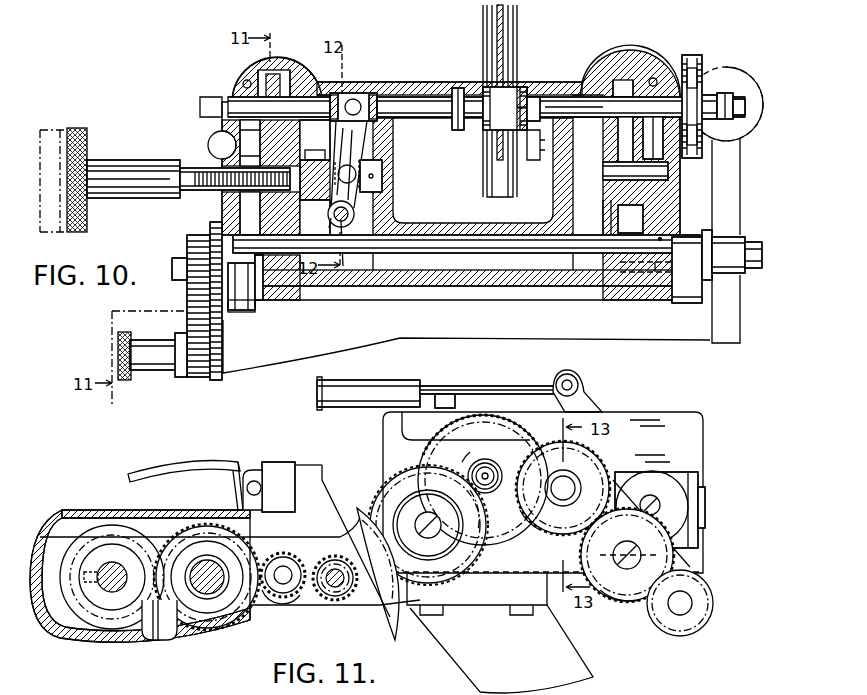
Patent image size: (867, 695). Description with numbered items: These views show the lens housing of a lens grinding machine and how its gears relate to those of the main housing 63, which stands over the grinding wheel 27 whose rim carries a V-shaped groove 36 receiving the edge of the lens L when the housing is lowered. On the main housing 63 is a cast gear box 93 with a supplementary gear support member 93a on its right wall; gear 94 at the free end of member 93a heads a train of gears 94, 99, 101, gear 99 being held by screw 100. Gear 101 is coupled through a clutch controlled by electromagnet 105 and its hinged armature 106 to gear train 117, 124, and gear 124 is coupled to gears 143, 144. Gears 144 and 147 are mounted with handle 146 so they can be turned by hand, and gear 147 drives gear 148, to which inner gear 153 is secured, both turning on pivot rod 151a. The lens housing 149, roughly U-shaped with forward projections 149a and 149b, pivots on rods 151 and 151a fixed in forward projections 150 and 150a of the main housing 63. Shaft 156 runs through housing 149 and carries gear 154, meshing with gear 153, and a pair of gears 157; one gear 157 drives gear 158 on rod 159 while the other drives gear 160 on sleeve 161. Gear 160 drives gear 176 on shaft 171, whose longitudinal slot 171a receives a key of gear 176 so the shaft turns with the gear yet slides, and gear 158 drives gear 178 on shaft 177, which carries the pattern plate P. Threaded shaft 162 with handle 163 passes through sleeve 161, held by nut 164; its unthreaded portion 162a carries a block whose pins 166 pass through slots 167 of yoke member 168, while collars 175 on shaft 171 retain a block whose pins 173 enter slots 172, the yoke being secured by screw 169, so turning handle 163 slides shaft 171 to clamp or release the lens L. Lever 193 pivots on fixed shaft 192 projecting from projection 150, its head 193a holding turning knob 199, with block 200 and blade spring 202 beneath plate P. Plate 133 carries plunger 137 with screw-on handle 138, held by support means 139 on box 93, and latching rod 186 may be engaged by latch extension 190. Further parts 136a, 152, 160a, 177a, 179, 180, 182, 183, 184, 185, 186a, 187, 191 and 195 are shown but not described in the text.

In FIG. 10, the grinding wheel 27 is at (514, 8).
In FIG. 10, the V-shaped groove 36 is at (492, 8).
In FIG. 10, the main housing 63 is at (630, 346).
In FIG. 11, the main housing 63 is at (583, 644).
In FIG. 11, the gear box 93 is at (377, 435).
In FIG. 11, the supplementary gear support member 93a is at (690, 567).
In FIG. 11, the gear 94 is at (652, 602).
In FIG. 11, the gear 99 is at (643, 500).
In FIG. 11, the screw 100 is at (630, 568).
In FIG. 11, the gear 101 is at (585, 530).
In FIG. 11, the electromagnet 105 is at (648, 471).
In FIG. 11, the armature 106 is at (706, 505).
In FIG. 11, the gear 117 is at (570, 482).
In FIG. 11, the gear 124 is at (494, 415).
In FIG. 11, the plate 133 is at (582, 398).
In FIG. 11, the pivot 136a is at (569, 375).
In FIG. 11, the plunger 137 is at (455, 386).
In FIG. 11, the screw-on handle 138 is at (352, 382).
In FIG. 11, the support means 139 is at (445, 394).
In FIG. 11, the gear 143 is at (478, 460).
In FIG. 10, the gear 144 is at (183, 378).
In FIG. 11, the gear 144 is at (470, 510).
In FIG. 10, the handle 146 is at (125, 381).
In FIG. 11, the handle 146 is at (460, 540).
In FIG. 10, the gear 147 is at (185, 370).
In FIG. 11, the gear 147 is at (405, 548).
In FIG. 10, the gear 148 is at (195, 255).
In FIG. 11, the gear 148 is at (390, 600).
In FIG. 10, the lens housing 149 is at (236, 86).
In FIG. 11, the lens housing 149 is at (277, 522).
In FIG. 10, the forward projection 149a is at (648, 68).
In FIG. 10, the forward projection 149b is at (270, 74).
In FIG. 11, the forward projection 149b is at (62, 510).
In FIG. 10, the forward projection 150 is at (682, 303).
In FIG. 10, the forward projection 150a is at (250, 312).
In FIG. 10, the rod 151 is at (652, 300).
In FIG. 10, the pivot rod 151a is at (264, 300).
In FIG. 11, the pivot rod 151a is at (338, 590).
In FIG. 10, the nut 152 is at (748, 270).
In FIG. 10, the inner gear 153 is at (243, 310).
In FIG. 11, the inner gear 153 is at (322, 600).
In FIG. 10, the gear 154 is at (215, 225).
In FIG. 11, the gear 154 is at (300, 595).
In FIG. 10, the shaft 156 is at (400, 255).
In FIG. 11, the shaft 156 is at (284, 585).
In FIG. 10, the gears 157 is at (300, 286).
In FIG. 10, the gear 158 is at (626, 210).
In FIG. 10, the rod 159 is at (664, 172).
In FIG. 10, the gear 160 is at (300, 130).
In FIG. 11, the gear 160 is at (282, 598).
In FIG. 10, the bracket lug 160a is at (325, 160).
In FIG. 10, the sleeve 161 is at (222, 170).
In FIG. 11, the sleeve 161 is at (207, 600).
In FIG. 10, the threaded shaft 162 is at (205, 165).
In FIG. 11, the threaded shaft 162 is at (203, 565).
In FIG. 10, the unthreaded end portion 162a is at (382, 178).
In FIG. 10, the handle 163 is at (150, 160).
In FIG. 10, the nut 164 is at (314, 200).
In FIG. 10, the pins 166 is at (354, 212).
In FIG. 10, the slots 167 is at (355, 170).
In FIG. 10, the yoke member 168 is at (348, 218).
In FIG. 10, the screw 169 is at (346, 228).
In FIG. 10, the shaft 171 is at (432, 100).
In FIG. 11, the shaft 171 is at (117, 585).
In FIG. 11, the longitudinal slot 171a is at (100, 585).
In FIG. 10, the slots 172 is at (362, 120).
In FIG. 10, the pins 173 is at (348, 100).
In FIG. 10, the collars 175 is at (371, 96).
In FIG. 10, the gear 176 is at (276, 80).
In FIG. 11, the gear 176 is at (156, 641).
In FIG. 10, the shaft 177 is at (580, 103).
In FIG. 10, the shaft end 177a is at (722, 95).
In FIG. 10, the gear 178 is at (622, 128).
In FIG. 10, the collar 179 is at (460, 122).
In FIG. 10, the hub 180 is at (523, 126).
In FIG. 10, the gear 182 is at (522, 110).
In FIG. 10, the flange 183 is at (522, 90).
In FIG. 10, the bearing 184 is at (657, 138).
In FIG. 10, the nut 185 is at (728, 93).
In FIG. 11, the latching rod 186 is at (332, 500).
In FIG. 11, the spring end 186a is at (322, 466).
In FIG. 11, the lever 187 is at (226, 462).
In FIG. 11, the latch extension 190 is at (296, 470).
In FIG. 11, the arm 191 is at (237, 480).
In FIG. 10, the fixed shaft 192 is at (704, 235).
In FIG. 10, the lever 193 is at (724, 192).
In FIG. 10, the lever head 193a is at (740, 90).
In FIG. 10, the knob 195 is at (746, 240).
In FIG. 10, the turning knob 199 is at (748, 110).
In FIG. 10, the block 200 is at (690, 56).
In FIG. 10, the blade spring 202 is at (700, 75).
In FIG. 10, the lens L is at (497, 150).
In FIG. 10, the pattern plate P is at (700, 124).